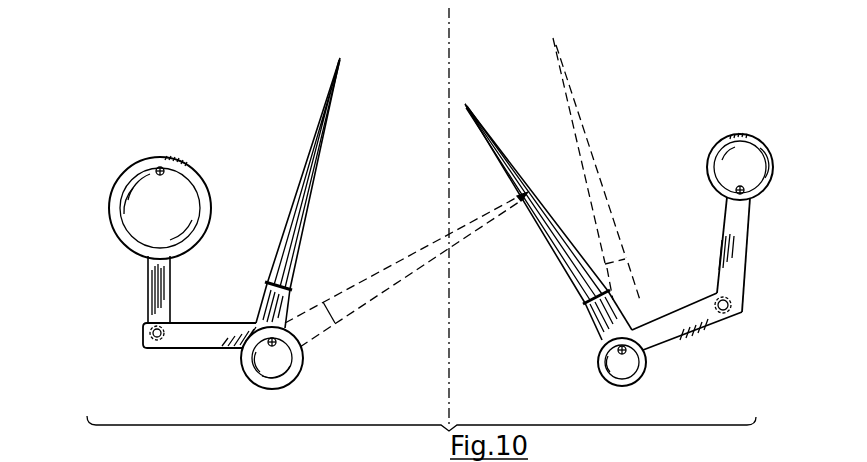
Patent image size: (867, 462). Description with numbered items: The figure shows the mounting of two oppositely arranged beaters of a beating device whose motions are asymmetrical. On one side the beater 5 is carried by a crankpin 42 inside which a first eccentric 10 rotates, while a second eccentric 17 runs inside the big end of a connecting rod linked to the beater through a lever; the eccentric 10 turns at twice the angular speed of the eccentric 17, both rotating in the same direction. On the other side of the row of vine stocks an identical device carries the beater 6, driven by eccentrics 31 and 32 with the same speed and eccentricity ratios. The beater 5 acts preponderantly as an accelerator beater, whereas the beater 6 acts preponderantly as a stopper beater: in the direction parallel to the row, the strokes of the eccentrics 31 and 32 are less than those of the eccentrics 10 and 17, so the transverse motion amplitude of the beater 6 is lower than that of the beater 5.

The beater 5 is at (287, 135).
The beater 6 is at (630, 148).
The second eccentric 17 is at (138, 203).
The first eccentric 10 is at (234, 364).
The crankpin 42 is at (285, 373).
The eccentric 31 is at (636, 366).
The eccentric 32 is at (742, 153).